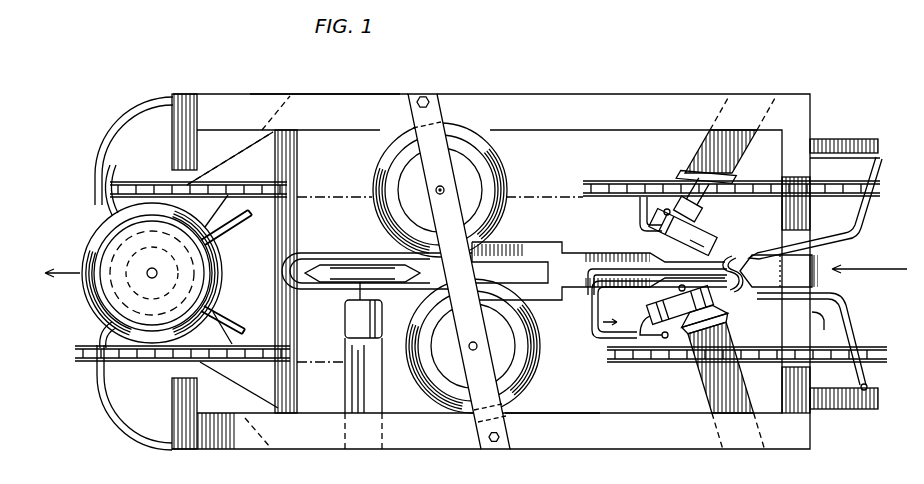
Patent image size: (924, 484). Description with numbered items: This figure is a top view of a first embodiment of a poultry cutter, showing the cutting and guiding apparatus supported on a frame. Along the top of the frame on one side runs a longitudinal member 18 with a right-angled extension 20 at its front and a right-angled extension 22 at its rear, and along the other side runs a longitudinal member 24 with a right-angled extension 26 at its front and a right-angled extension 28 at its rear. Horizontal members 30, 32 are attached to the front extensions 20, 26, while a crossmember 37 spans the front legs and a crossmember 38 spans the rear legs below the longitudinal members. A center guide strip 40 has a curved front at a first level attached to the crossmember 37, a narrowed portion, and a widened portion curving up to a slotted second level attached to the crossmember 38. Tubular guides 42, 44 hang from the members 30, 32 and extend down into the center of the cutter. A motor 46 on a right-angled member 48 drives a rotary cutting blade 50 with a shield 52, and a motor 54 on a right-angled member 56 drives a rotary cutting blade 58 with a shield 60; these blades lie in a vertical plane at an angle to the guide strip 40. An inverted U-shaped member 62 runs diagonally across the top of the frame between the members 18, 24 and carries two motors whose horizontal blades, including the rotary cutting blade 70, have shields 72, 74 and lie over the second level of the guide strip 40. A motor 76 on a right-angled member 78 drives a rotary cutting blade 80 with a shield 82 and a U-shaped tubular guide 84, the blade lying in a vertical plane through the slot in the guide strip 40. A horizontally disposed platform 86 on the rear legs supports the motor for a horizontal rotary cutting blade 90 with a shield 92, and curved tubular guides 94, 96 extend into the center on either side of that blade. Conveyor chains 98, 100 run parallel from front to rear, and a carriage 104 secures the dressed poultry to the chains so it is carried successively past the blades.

The longitudinal member 18 is at (535, 451).
The right-angled extension 20 is at (810, 378).
The right-angled extension 22 is at (185, 396).
The longitudinal member 24 is at (486, 93).
The right-angled extension 26 is at (812, 166).
The right-angled extension 28 is at (200, 148).
The horizontal member 30 is at (858, 398).
The horizontal member 32 is at (836, 139).
The crossmember 37 is at (826, 326).
The crossmember 38 is at (283, 400).
The center guide strip 40 is at (546, 240).
The tubular guide 42 is at (858, 328).
The tubular guide 44 is at (857, 225).
The motor 46 is at (725, 333).
The right-angled member 48 is at (710, 395).
The rotary cutting blade 50 is at (737, 288).
The shield 52 is at (656, 300).
The motor 54 is at (743, 197).
The right-angled member 56 is at (722, 145).
The rotary cutting blade 58 is at (727, 257).
The shield 60 is at (663, 240).
The inverted U-shaped member 62 is at (510, 411).
The rotary cutting blade 70 is at (487, 150).
The shield 72 is at (517, 377).
The shield 74 is at (477, 185).
The motor 76 is at (360, 322).
The right-angled member 78 is at (367, 392).
The rotary cutting blade 80 is at (313, 257).
The shield 82 is at (347, 270).
The U-shaped tubular guide 84 is at (303, 253).
The horizontally disposed platform 86 is at (213, 313).
The rotary cutting blade 90 is at (217, 283).
The shield 92 is at (217, 233).
The curved tubular guide 94 is at (122, 420).
The curved tubular guide 96 is at (138, 115).
The conveyor chain 98 is at (88, 345).
The conveyor chain 100 is at (120, 167).
The carriage 104 is at (600, 325).